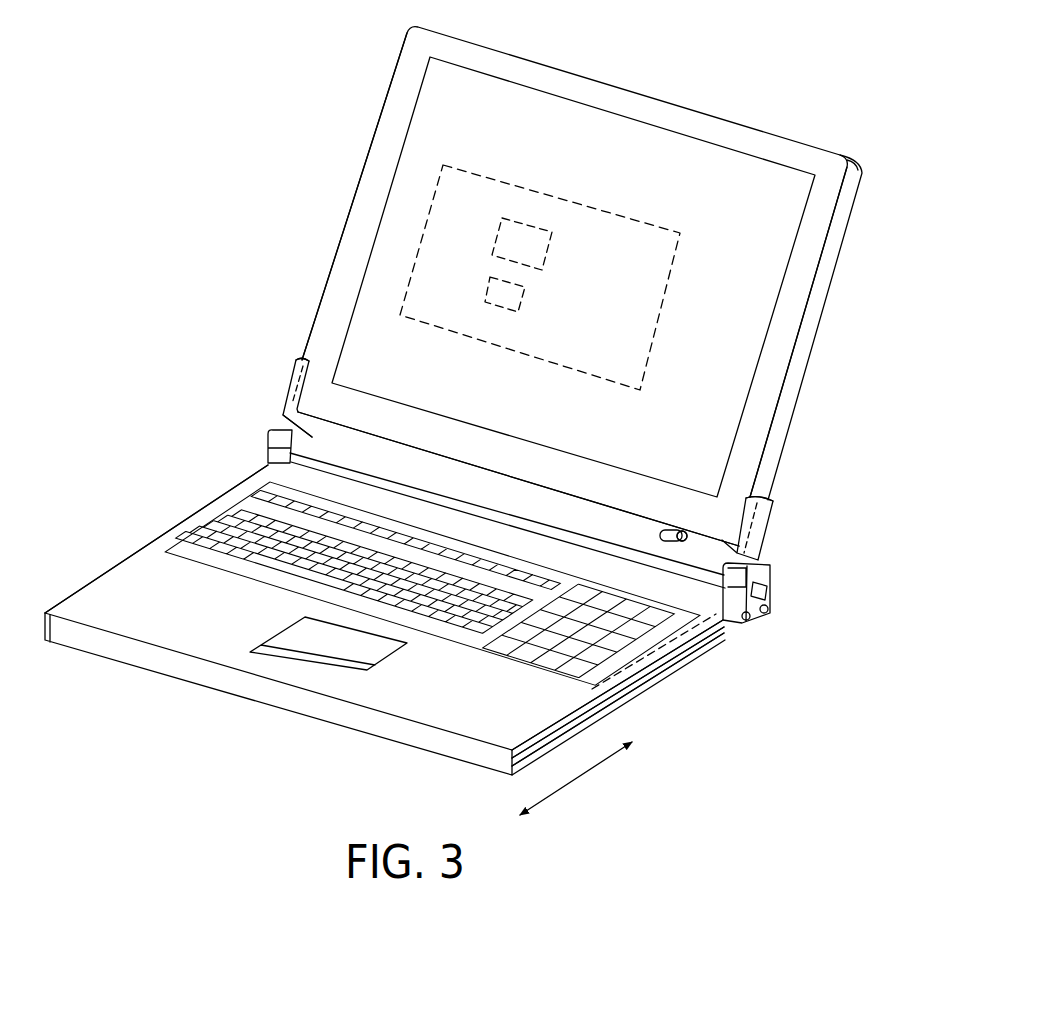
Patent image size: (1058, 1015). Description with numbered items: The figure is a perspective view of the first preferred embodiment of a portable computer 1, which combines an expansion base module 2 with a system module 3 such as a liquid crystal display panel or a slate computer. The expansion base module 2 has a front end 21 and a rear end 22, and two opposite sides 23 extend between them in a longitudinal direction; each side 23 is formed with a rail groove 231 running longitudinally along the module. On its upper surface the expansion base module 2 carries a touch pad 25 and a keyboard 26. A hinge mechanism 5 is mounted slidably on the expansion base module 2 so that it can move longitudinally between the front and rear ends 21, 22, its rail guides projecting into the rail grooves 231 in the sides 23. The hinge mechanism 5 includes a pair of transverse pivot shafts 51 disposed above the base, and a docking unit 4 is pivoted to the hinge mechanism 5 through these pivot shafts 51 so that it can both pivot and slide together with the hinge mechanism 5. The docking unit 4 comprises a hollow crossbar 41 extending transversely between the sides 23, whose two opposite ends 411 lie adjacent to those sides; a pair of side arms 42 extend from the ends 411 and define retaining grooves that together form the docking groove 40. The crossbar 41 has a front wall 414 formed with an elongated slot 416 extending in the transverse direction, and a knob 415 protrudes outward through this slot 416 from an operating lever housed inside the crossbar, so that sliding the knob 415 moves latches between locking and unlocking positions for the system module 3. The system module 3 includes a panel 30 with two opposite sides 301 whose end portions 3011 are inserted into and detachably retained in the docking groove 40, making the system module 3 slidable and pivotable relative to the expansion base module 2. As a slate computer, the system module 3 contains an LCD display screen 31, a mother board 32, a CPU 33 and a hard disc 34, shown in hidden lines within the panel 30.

The portable computer 1 is at (188, 326).
The expansion base module 2 is at (185, 692).
The front end 21 is at (270, 693).
The rear end 22 is at (692, 587).
The side 23 is at (168, 530).
The rail groove 231 is at (613, 703).
The touch pad 25 is at (302, 640).
The keyboard 26 is at (175, 552).
The system module 3 is at (658, 88).
The panel 30 is at (812, 287).
The side 301 is at (353, 207).
The end portion 3011 is at (295, 367).
The LCD display screen 31 is at (715, 162).
The mother board 32 is at (502, 182).
The CPU 33 is at (545, 248).
The hard disc 34 is at (518, 302).
The docking unit 4 is at (278, 405).
The docking groove 40 is at (828, 477).
The crossbar 41 is at (390, 463).
The end 411 is at (280, 415).
The front wall 414 is at (497, 500).
The knob 415 is at (660, 535).
The elongated slot 416 is at (680, 535).
The side arm 42 is at (293, 393).
The hinge mechanism 5 is at (262, 450).
The pivot shaft 51 is at (772, 587).